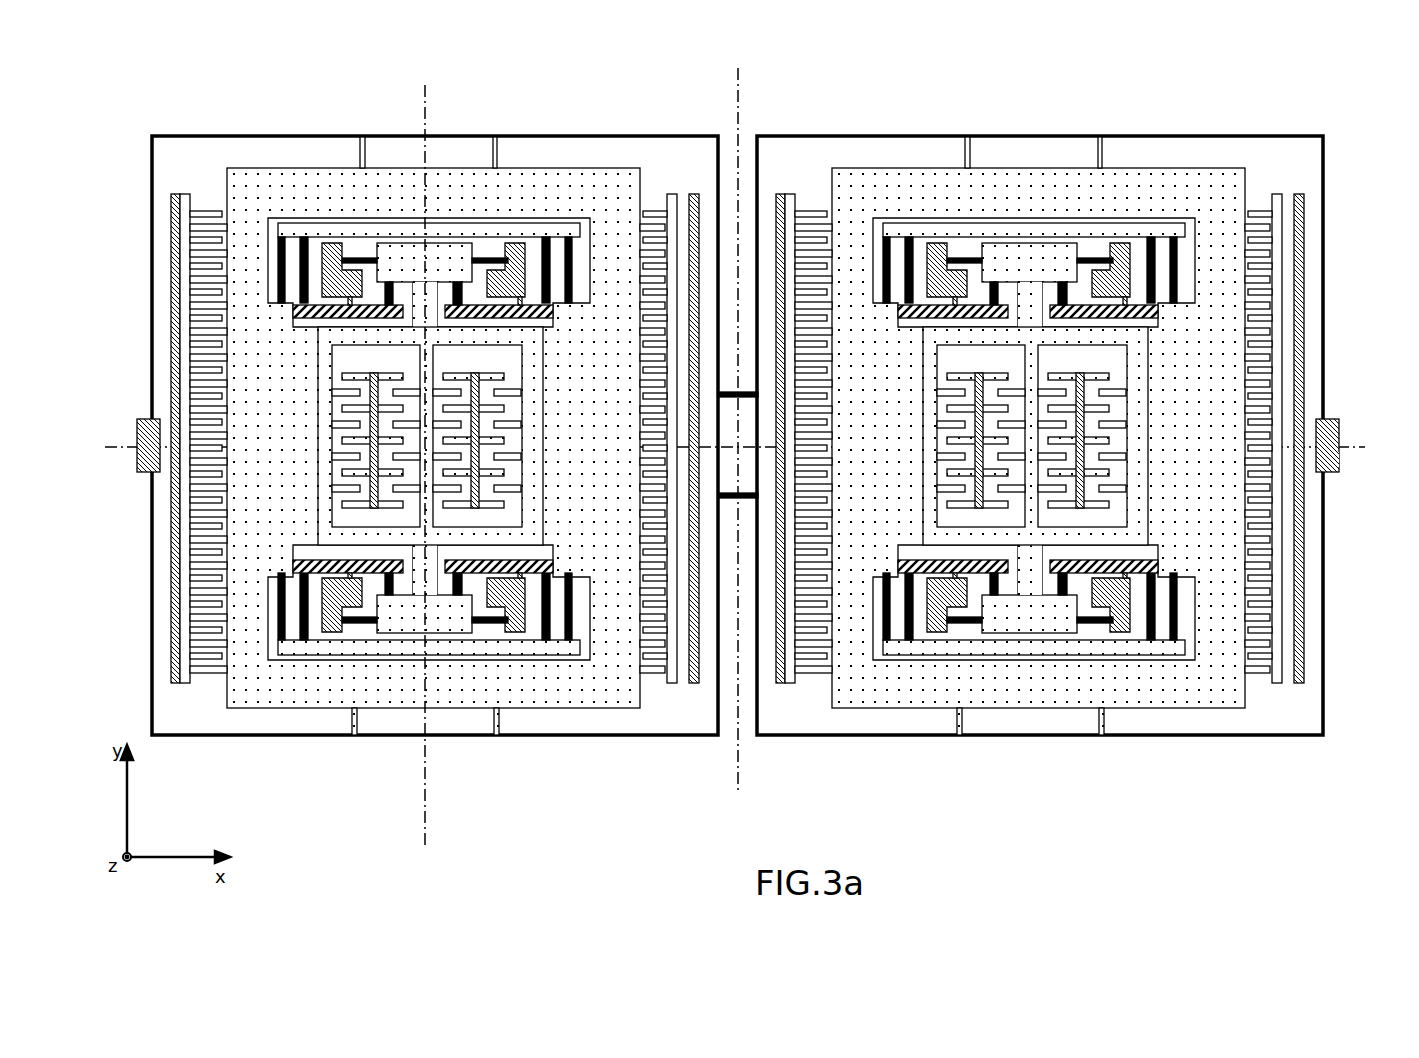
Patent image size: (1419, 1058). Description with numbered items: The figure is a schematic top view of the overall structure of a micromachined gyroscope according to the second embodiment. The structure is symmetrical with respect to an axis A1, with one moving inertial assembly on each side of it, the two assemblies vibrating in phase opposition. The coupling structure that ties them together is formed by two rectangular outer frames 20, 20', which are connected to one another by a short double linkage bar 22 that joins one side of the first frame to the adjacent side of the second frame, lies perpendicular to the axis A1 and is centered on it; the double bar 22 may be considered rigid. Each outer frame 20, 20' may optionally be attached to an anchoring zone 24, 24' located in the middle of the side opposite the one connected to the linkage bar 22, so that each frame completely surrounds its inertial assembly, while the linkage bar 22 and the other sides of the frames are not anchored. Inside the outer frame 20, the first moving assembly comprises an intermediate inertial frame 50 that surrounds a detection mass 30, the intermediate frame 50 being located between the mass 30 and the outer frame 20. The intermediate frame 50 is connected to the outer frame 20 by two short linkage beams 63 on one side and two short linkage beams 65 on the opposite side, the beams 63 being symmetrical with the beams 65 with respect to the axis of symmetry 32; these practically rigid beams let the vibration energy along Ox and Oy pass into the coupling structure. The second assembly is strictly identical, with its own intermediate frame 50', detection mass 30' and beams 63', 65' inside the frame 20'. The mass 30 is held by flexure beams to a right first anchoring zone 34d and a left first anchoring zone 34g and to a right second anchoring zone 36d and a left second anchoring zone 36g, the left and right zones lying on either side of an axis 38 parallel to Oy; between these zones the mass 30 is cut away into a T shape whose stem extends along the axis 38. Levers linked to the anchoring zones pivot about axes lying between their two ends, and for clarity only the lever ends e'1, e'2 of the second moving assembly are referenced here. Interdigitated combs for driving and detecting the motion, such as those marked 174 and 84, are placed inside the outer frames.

The rectangular outer frame 20 is at (433, 418).
The rectangular outer frame 20' is at (1040, 462).
The double linkage bar 22 is at (747, 493).
The anchoring zone 24 is at (129, 426).
The anchoring zone 24' is at (1353, 427).
The detection mass 30 is at (422, 368).
The detection mass 30' is at (1026, 368).
The axis of symmetry 32 is at (1364, 468).
The left first anchoring zone 34g is at (327, 250).
The right first anchoring zone 34d is at (515, 253).
The left second anchoring zone 36g is at (330, 632).
The right second anchoring zone 36d is at (507, 632).
The axis 38 is at (428, 808).
The intermediate inertial frame 50 is at (450, 409).
The intermediate inertial frame 50' is at (1015, 404).
The short linkage beams 63 is at (435, 135).
The short linkage beams 63' is at (1039, 134).
The short linkage beams 65 is at (419, 749).
The short linkage beams 65' is at (1022, 749).
The fixed comb electrode 84 is at (700, 685).
The fixed comb electrode 174 is at (171, 240).
The axis of symmetry A1 is at (734, 418).
The lever end e'1 is at (1023, 439).
The lever end e'2 is at (1052, 438).